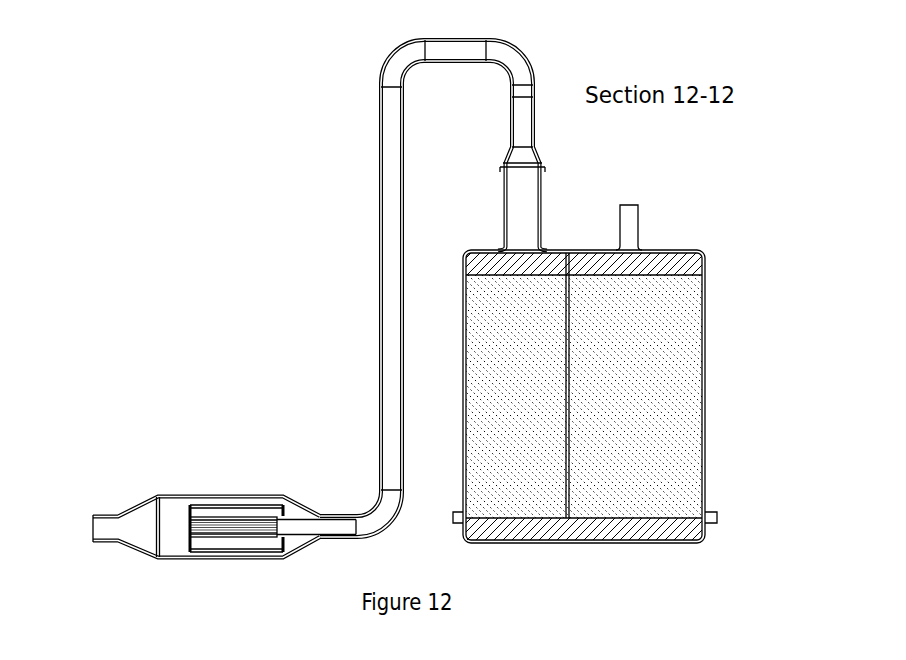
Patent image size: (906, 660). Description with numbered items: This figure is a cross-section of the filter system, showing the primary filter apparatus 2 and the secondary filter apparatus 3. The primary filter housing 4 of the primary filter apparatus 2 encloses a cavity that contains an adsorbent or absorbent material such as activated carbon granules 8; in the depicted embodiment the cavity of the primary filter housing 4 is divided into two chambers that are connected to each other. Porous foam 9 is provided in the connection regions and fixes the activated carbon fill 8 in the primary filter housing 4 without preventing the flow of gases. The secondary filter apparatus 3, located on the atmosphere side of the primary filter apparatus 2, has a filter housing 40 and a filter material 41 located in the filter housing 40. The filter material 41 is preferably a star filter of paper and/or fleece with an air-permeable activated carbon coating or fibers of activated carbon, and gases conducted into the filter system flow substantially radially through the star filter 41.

The primary filter apparatus 2 is at (463, 370).
The secondary filter apparatus 3 is at (184, 495).
The primary filter housing 4 is at (706, 358).
The activated carbon granules 8 is at (643, 483).
The porous foam 9 is at (695, 263).
The filter housing 40 is at (190, 558).
The filter material 41 is at (231, 521).